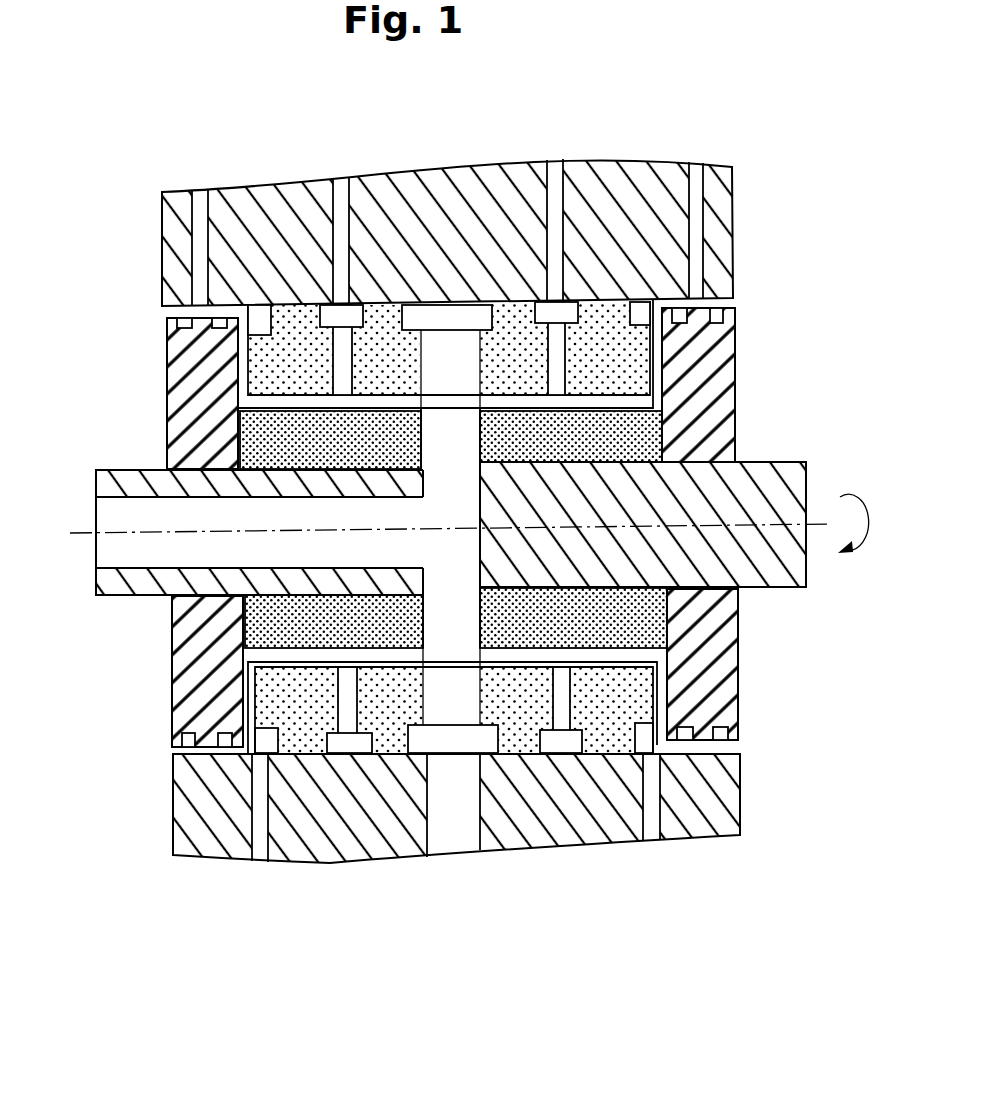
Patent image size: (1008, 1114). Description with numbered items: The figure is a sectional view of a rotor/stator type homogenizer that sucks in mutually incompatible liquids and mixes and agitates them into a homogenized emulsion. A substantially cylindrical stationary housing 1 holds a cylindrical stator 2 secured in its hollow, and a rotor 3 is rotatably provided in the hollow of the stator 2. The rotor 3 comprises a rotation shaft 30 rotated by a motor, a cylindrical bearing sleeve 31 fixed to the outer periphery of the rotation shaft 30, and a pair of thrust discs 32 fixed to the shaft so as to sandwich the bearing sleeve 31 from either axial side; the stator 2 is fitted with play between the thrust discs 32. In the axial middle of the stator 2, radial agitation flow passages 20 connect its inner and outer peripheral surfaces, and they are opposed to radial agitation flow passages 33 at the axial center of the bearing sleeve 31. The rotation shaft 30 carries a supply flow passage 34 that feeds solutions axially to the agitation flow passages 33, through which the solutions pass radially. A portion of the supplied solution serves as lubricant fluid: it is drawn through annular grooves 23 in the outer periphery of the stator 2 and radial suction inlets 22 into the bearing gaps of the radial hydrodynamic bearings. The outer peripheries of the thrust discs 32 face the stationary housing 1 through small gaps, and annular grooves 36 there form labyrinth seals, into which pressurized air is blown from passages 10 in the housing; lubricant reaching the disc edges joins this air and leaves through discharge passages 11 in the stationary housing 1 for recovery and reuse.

The stationary housing 1 is at (163, 841).
The stator 2 is at (305, 755).
The rotor 3 is at (756, 449).
The passages 10 is at (200, 222).
The discharge passages 11 is at (257, 835).
The agitation flow passages 20 is at (440, 345).
The suction inlets 22 is at (340, 360).
The annular grooves 23 is at (352, 745).
The rotation shaft 30 is at (130, 470).
The bearing sleeve 31 is at (605, 628).
The thrust discs 32 is at (725, 655).
The agitation flow passages 33 is at (490, 628).
The supply flow passage 34 is at (140, 567).
The annular grooves 36 is at (176, 318).